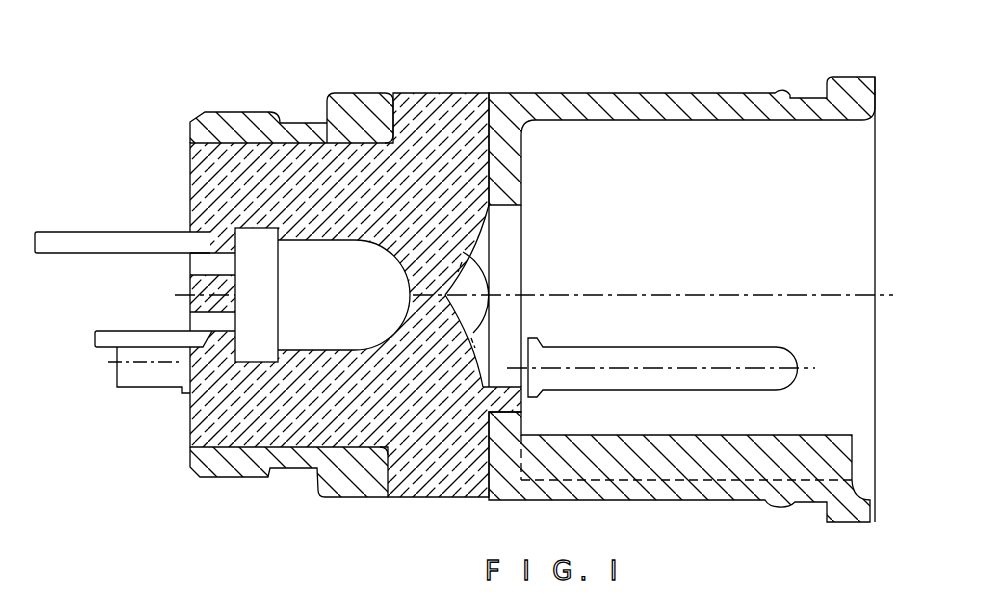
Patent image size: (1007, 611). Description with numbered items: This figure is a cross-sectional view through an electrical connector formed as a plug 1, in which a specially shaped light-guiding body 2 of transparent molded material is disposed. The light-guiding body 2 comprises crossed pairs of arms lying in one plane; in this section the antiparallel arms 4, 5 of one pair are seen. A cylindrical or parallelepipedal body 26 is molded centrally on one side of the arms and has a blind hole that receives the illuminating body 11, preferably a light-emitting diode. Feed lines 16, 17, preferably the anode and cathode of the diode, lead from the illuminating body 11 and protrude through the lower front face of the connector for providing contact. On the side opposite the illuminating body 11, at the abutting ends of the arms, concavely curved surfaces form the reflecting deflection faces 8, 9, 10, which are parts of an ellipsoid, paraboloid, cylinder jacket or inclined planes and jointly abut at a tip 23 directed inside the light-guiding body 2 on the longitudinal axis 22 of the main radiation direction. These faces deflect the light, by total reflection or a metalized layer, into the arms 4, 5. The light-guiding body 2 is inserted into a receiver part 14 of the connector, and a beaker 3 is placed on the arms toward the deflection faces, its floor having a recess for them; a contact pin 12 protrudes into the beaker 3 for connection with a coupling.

The plug 1 is at (643, 163).
The light-guiding body 2 is at (290, 148).
The beaker 3 is at (740, 105).
The arm 4 is at (440, 98).
The arm 5 is at (437, 492).
The reflecting deflection face 8 is at (478, 350).
The reflecting deflection face 9 is at (478, 245).
The reflecting deflection face 10 is at (477, 303).
The illuminating body 11 is at (333, 282).
The contact pin 12 is at (787, 363).
The receiver part 14 is at (360, 120).
The feed line 16 is at (47, 238).
The feed line 17 is at (112, 342).
The longitudinal axis 22 is at (388, 297).
The tip 23 is at (445, 295).
The cylindrical or parallelepipedal body 26 is at (207, 442).